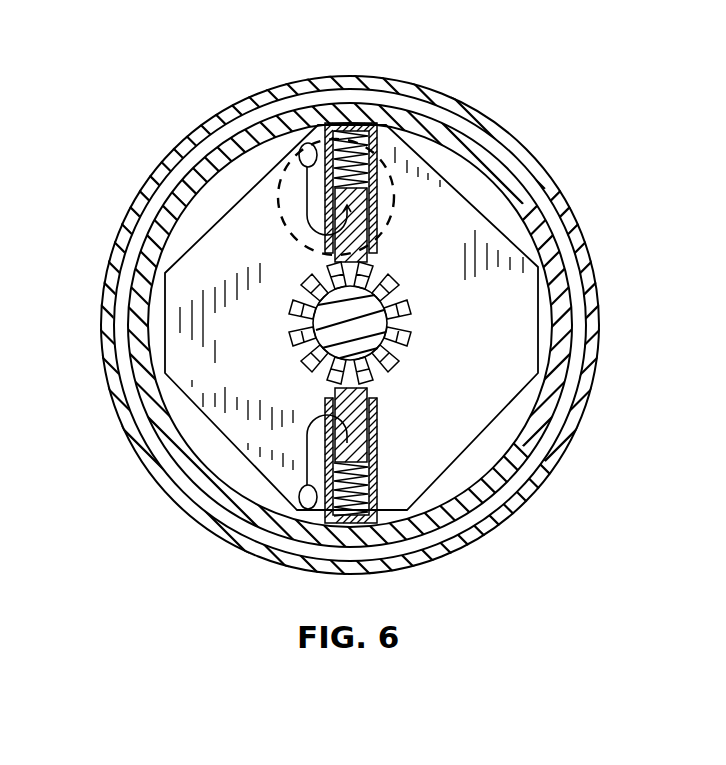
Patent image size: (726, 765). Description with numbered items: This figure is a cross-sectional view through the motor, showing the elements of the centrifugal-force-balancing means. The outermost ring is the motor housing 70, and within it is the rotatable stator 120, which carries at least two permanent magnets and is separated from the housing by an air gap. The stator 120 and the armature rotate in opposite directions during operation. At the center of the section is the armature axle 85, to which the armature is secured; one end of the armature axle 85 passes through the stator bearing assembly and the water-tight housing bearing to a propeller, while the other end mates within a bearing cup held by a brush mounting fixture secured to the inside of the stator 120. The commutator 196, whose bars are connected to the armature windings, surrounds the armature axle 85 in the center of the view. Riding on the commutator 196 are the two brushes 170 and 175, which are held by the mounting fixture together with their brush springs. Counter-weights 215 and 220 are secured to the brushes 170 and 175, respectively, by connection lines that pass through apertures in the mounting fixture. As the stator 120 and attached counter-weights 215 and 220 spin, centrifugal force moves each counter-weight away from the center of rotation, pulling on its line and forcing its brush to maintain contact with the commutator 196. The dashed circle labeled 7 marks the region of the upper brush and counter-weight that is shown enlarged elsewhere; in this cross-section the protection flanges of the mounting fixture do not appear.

The motor housing 70 is at (533, 157).
The rotatable stator 120 is at (440, 125).
The counter-weight 215 is at (310, 143).
The counter-weight 220 is at (306, 503).
The brush 170 is at (366, 223).
The brush 175 is at (357, 431).
The detail region circle 7 is at (283, 232).
The commutator 196 is at (392, 340).
The armature axle 85 is at (379, 354).